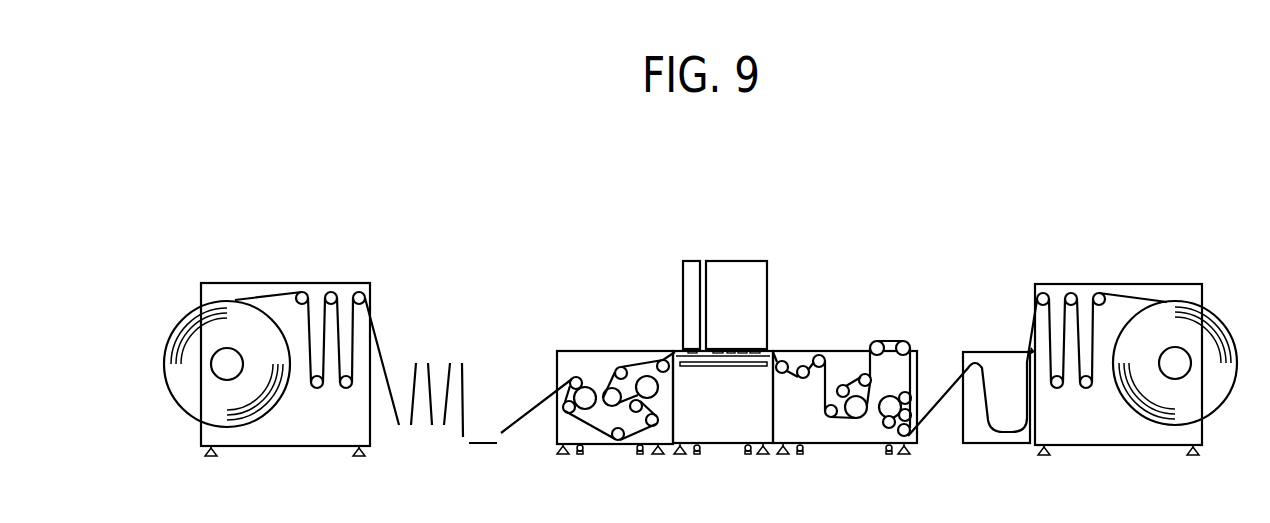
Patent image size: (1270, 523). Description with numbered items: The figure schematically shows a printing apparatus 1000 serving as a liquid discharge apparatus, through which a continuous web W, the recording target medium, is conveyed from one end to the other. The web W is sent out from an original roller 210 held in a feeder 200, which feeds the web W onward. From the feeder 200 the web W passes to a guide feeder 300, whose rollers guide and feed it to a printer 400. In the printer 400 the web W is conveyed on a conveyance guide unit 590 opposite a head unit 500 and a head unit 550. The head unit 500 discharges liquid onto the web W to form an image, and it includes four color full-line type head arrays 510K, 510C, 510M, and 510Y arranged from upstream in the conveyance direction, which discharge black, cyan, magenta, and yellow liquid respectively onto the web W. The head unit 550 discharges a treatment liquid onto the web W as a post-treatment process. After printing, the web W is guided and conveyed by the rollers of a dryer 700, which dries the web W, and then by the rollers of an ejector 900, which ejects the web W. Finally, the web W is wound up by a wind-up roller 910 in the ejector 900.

The printing apparatus 1000 is at (1039, 146).
The ejector 900 is at (231, 270).
The wind-up roller 910 is at (222, 373).
The dryer 700 is at (583, 333).
The printer 400 is at (774, 238).
The head unit 550 is at (688, 258).
The head unit 500 is at (742, 258).
The head array 510Y is at (718, 347).
The head array 510M is at (731, 347).
The head array 510C is at (743, 347).
The head array 510K is at (756, 347).
The conveyance guide unit 590 is at (717, 367).
The guide feeder 300 is at (864, 333).
The feeder 200 is at (1101, 275).
The original roller 210 is at (1175, 372).
The web W is at (1144, 295).